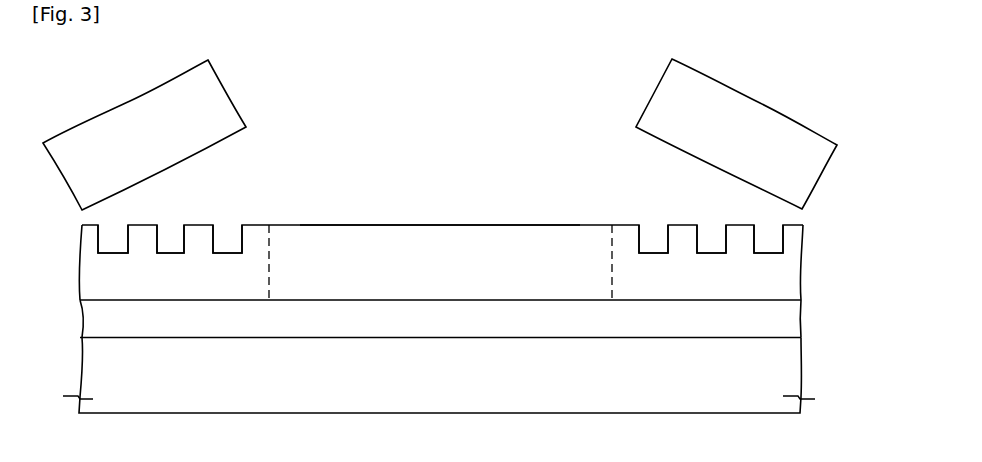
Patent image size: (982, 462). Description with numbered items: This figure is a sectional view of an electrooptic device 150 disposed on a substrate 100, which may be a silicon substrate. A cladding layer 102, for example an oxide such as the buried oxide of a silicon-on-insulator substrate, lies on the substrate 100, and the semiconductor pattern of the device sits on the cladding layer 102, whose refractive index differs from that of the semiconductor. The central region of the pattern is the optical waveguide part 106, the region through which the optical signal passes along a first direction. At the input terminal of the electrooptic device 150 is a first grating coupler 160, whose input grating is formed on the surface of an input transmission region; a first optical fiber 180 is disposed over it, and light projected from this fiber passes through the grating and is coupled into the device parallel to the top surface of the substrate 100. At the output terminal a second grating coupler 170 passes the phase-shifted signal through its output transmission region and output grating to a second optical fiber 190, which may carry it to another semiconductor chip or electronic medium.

The substrate 100 is at (788, 370).
The cladding layer 102 is at (788, 318).
The optical waveguide part 106 is at (453, 274).
The electrooptic device 150 is at (442, 221).
The first grating coupler 160 is at (198, 201).
The second grating coupler 170 is at (685, 203).
The first optical fiber 180 is at (137, 107).
The second optical fiber 190 is at (747, 108).